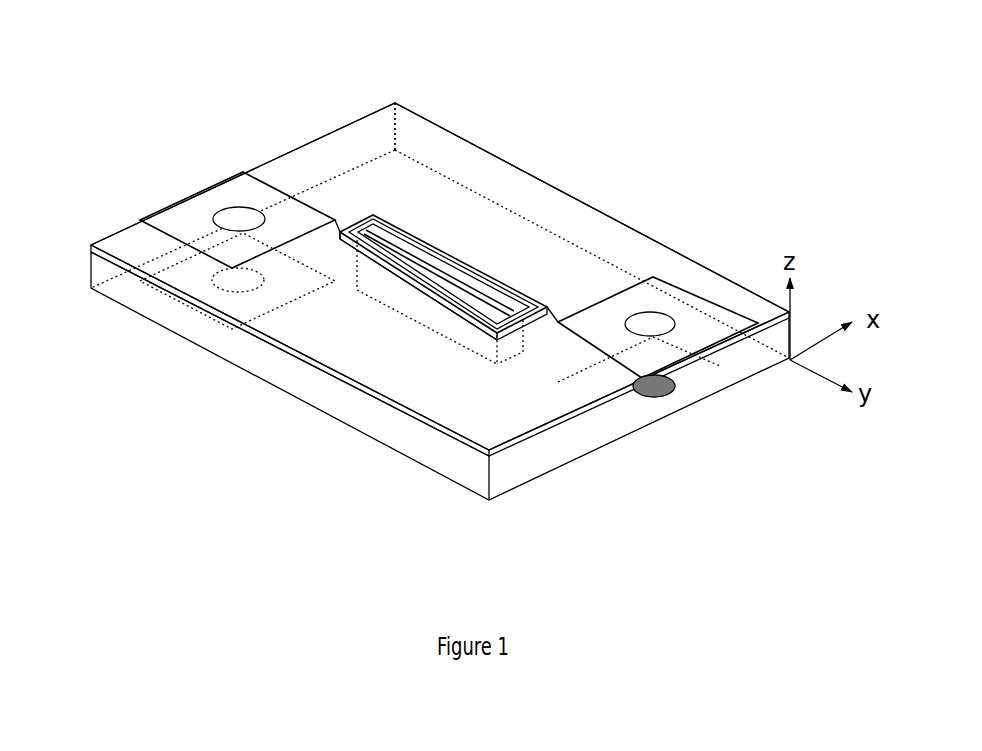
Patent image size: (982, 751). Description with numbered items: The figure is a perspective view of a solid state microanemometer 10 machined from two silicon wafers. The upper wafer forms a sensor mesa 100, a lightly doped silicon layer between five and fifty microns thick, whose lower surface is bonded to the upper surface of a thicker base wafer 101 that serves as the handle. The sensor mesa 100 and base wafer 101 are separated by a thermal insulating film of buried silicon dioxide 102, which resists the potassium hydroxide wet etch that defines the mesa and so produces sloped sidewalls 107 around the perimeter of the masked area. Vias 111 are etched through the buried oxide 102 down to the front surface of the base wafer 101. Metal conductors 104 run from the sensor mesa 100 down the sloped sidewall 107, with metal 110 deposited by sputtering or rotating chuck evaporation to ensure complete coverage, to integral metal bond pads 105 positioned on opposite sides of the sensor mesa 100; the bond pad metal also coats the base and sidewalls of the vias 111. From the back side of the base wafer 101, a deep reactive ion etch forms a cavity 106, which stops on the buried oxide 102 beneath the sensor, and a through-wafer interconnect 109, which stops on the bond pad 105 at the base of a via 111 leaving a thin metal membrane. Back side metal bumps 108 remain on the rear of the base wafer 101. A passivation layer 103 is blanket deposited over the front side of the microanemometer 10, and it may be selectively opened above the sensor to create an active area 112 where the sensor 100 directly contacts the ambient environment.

The solid state microanemometer 10 is at (715, 238).
The sensor mesa 100 is at (358, 218).
The base wafer 101 is at (425, 450).
The buried silicon dioxide film 102 is at (520, 443).
The passivation layer 103 is at (395, 148).
The metal conductors 104 is at (450, 282).
The metal bond pads 105 is at (178, 213).
The cavity 106 is at (430, 330).
The sloped sidewalls 107 is at (340, 250).
The back side metal bumps 108 is at (192, 315).
The through-wafer interconnect 109 is at (210, 268).
The metal 110 is at (545, 305).
The vias 111 is at (240, 217).
The active area 112 is at (417, 228).